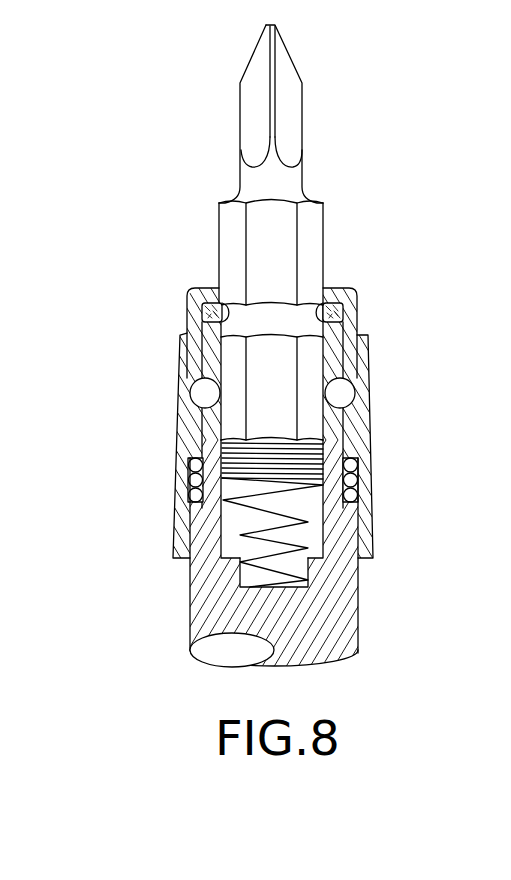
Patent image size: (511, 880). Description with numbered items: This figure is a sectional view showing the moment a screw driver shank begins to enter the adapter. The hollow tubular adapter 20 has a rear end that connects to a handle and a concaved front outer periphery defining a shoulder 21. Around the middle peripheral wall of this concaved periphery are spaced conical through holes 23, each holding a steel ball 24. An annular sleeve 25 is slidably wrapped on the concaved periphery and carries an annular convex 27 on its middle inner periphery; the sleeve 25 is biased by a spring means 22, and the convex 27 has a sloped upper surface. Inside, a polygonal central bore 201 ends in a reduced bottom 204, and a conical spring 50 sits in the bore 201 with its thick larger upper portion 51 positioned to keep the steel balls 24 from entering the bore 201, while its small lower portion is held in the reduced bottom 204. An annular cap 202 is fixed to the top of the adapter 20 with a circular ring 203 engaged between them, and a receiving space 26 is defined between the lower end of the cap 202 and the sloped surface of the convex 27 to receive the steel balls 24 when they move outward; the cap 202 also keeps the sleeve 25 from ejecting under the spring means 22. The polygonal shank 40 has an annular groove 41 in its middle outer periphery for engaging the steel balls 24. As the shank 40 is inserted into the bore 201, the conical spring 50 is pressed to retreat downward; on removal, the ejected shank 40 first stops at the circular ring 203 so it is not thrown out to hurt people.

The tubular adapter 20 is at (255, 480).
The shoulder 21 is at (255, 480).
The spring means 22 is at (352, 494).
The conical through holes 23 is at (208, 412).
The steel balls 24 is at (333, 395).
The annular sleeve 25 is at (372, 421).
The receiving space 26 is at (365, 363).
The annular convex 27 is at (345, 447).
The polygonal shank 40 is at (313, 235).
The annular groove 41 is at (204, 313).
The conical spring 50 is at (218, 524).
The thick larger upper portion 51 is at (260, 490).
The polygonal central bore 201 is at (242, 543).
The annular cap 202 is at (345, 308).
The circular ring 203 is at (342, 308).
The reduced bottom 204 is at (295, 579).